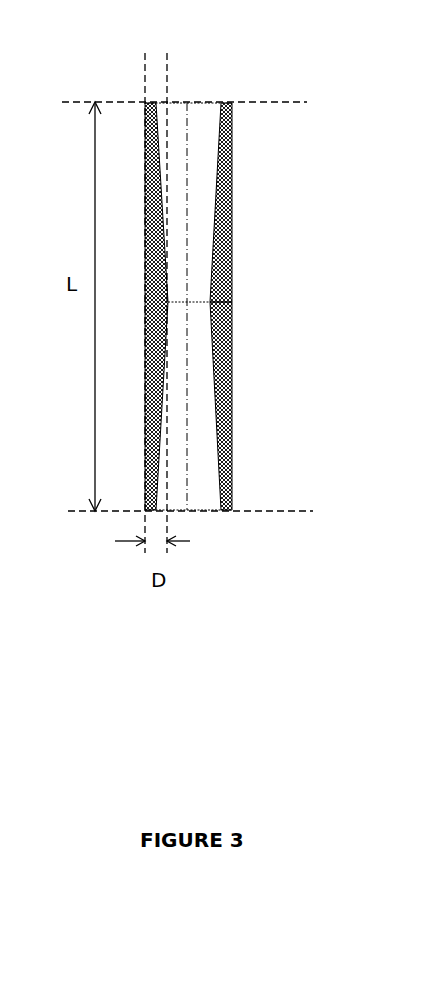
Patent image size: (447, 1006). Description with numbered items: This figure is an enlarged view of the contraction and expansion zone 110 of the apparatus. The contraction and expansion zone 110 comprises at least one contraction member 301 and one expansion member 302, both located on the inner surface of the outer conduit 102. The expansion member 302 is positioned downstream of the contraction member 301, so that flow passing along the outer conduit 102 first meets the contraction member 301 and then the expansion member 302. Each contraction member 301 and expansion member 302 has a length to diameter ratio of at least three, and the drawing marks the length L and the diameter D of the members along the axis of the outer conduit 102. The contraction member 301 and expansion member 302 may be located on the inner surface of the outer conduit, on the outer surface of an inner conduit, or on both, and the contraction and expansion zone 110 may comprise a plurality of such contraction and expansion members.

The contraction and expansion zone 110 is at (241, 61).
The outer conduit 102 is at (230, 356).
The contraction member 301 is at (222, 208).
The expansion member 302 is at (222, 432).